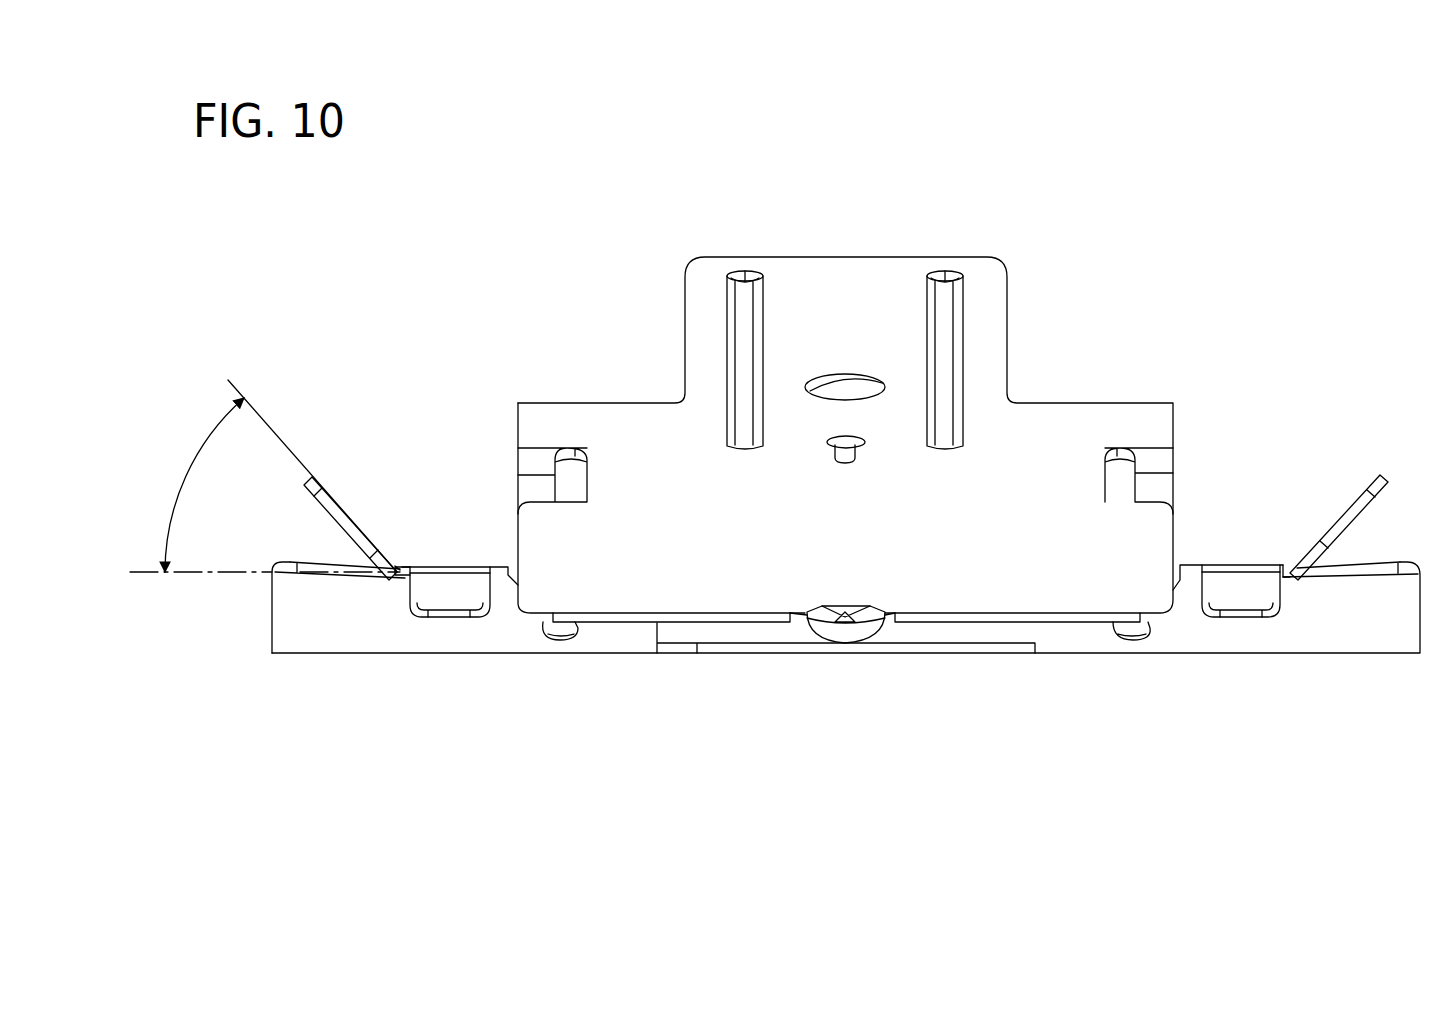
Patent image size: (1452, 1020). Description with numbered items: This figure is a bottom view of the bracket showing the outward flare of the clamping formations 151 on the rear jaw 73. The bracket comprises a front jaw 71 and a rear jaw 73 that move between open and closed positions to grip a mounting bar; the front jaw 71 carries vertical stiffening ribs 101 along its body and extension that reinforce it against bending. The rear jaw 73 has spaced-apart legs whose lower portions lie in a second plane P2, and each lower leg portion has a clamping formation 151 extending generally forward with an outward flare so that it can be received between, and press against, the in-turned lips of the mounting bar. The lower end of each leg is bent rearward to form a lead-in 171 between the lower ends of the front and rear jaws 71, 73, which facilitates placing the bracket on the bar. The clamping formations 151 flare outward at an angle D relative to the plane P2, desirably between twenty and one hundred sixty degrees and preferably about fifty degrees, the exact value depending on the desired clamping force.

The front jaw 71 is at (1106, 398).
The rear jaw 73 is at (1362, 662).
The vertical stiffening ribs 101 is at (733, 318).
The clamping formation 151 is at (357, 507).
The lead-in 171 is at (445, 590).
The angle D is at (204, 485).
The second plane P2 is at (207, 573).